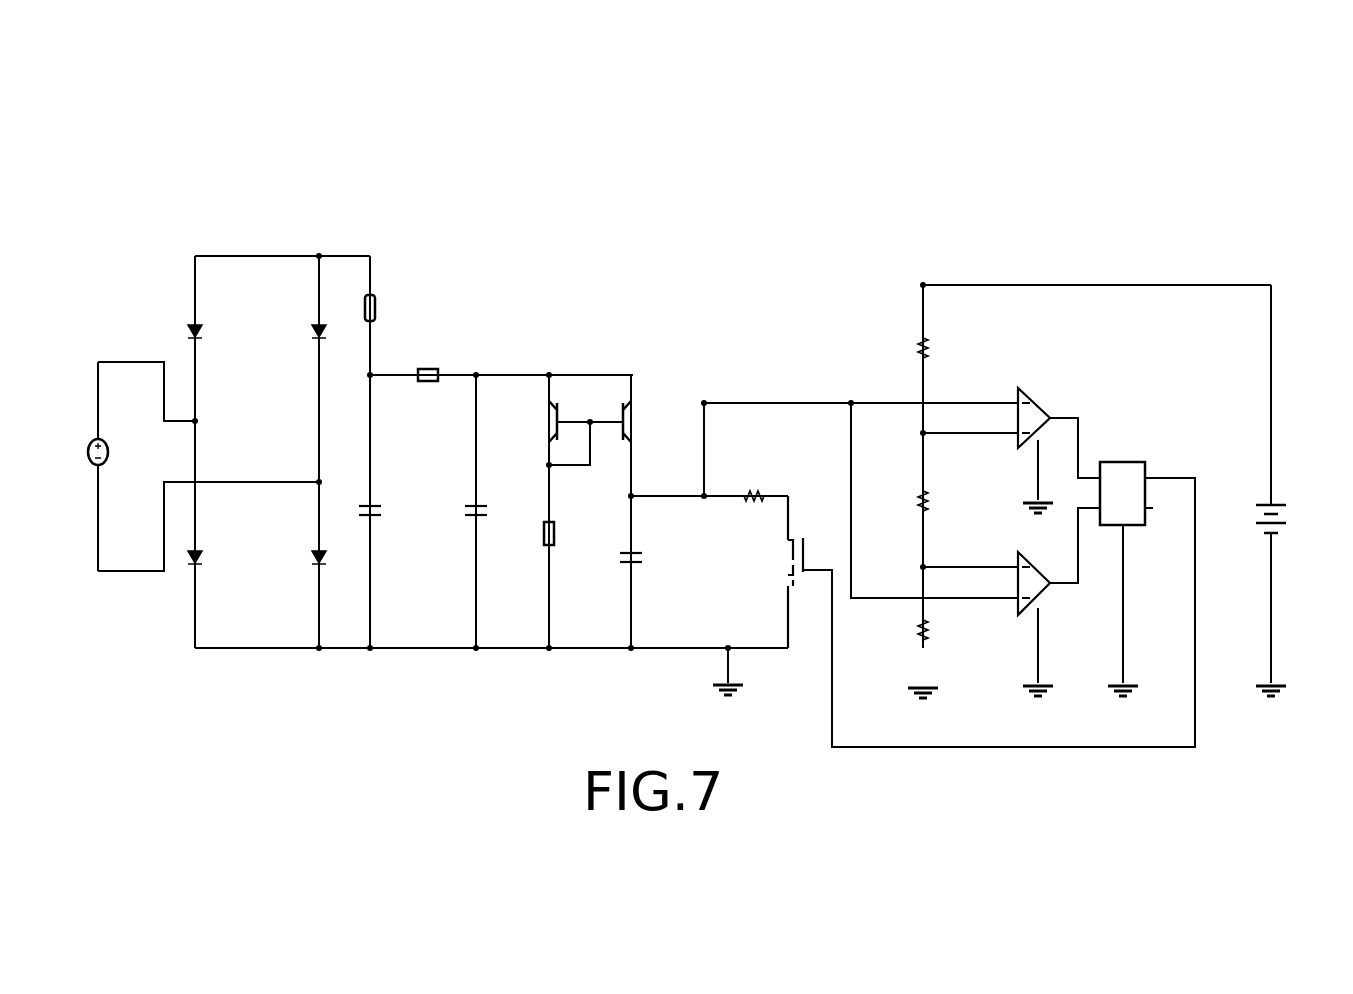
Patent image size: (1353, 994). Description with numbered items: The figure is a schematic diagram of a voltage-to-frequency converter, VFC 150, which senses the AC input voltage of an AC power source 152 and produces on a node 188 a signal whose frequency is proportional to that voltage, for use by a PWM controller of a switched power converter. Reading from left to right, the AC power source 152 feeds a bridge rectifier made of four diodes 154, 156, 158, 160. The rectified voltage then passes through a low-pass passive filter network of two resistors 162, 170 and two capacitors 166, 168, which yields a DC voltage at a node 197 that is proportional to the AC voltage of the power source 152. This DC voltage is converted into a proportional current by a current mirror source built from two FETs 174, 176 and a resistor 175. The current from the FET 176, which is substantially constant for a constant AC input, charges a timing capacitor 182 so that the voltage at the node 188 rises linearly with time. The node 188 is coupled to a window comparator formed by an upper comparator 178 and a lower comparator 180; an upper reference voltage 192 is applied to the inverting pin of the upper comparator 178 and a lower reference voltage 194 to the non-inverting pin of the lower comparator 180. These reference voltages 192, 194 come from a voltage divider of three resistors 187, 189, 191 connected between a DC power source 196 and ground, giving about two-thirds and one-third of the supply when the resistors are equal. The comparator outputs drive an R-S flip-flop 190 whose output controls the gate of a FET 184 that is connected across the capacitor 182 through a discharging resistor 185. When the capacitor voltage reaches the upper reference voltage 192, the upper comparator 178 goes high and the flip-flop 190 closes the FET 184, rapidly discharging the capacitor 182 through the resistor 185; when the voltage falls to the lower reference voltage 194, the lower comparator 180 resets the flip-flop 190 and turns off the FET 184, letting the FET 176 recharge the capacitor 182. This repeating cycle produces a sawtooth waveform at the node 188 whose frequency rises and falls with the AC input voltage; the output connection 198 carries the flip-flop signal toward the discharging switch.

The VFC 150 is at (1000, 125).
The AC power source 152 is at (90, 443).
The diode 154 is at (188, 328).
The diode 156 is at (312, 328).
The diode 158 is at (188, 565).
The diode 160 is at (312, 565).
The resistor 162 is at (378, 306).
The capacitor 166 is at (376, 522).
The capacitor 168 is at (474, 522).
The resistor 170 is at (432, 366).
The FET 174 is at (552, 418).
The resistor 175 is at (553, 545).
The FET 176 is at (630, 420).
The upper comparator 178 is at (1033, 402).
The lower comparator 180 is at (1046, 586).
The timing capacitor 182 is at (638, 567).
The FET 184 is at (782, 578).
The discharging resistor 185 is at (757, 488).
The resistor 187 is at (930, 335).
The node 188 is at (727, 396).
The resistor 189 is at (915, 490).
The R-S flip-flop 190 is at (1124, 460).
The resistor 191 is at (912, 632).
The upper reference voltage 192 is at (968, 428).
The lower reference voltage 194 is at (985, 572).
The DC power source 196 is at (1282, 513).
The node 197 is at (553, 372).
The output line 198 is at (1182, 476).